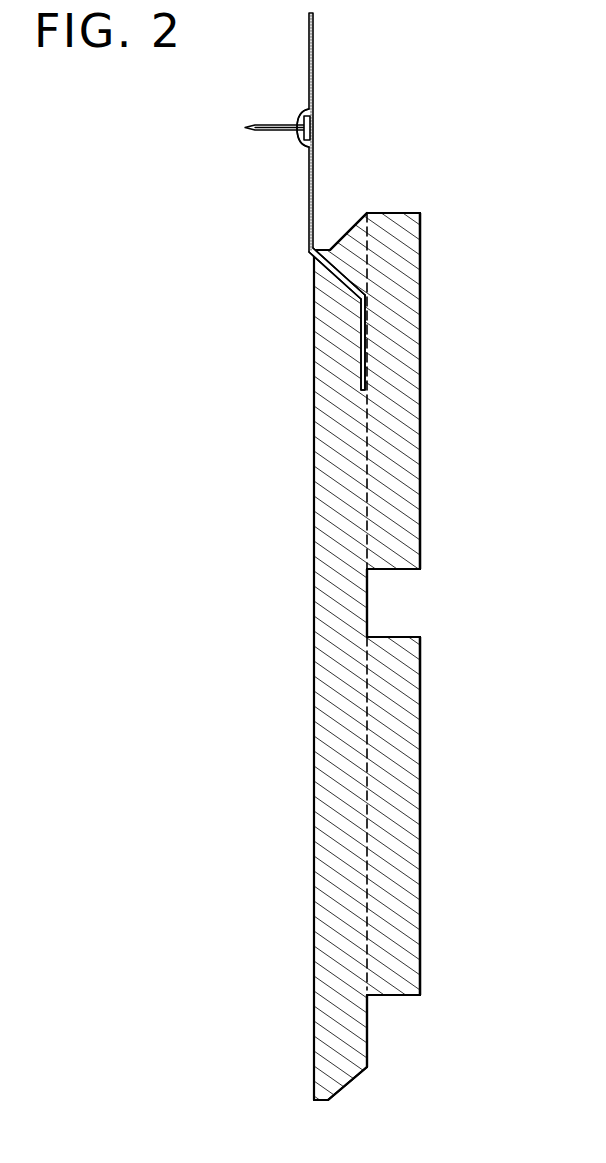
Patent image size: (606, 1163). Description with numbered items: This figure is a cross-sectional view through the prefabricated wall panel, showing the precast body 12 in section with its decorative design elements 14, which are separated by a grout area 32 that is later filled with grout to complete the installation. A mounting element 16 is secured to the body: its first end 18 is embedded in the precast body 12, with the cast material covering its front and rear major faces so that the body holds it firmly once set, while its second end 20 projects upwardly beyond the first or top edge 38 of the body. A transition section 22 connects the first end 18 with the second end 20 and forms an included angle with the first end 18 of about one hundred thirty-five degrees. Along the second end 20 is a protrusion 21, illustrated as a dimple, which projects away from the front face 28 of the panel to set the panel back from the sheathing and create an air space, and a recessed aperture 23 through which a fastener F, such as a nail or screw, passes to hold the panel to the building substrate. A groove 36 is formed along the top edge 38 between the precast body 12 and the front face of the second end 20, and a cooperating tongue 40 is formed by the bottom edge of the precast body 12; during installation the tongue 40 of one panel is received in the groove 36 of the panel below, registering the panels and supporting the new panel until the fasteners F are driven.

The precast body 12 is at (333, 947).
The decorative design element 14 is at (420, 463).
The mounting element 16 is at (351, 201).
The first end 18 is at (368, 345).
The second end 20 is at (308, 189).
The protrusion 21 is at (304, 113).
The transition section 22 is at (342, 283).
The recessed aperture 23 is at (300, 136).
The front face 28 is at (421, 393).
The grout area 32 is at (368, 600).
The groove 36 is at (320, 246).
The top edge 38 is at (397, 212).
The tongue 40 is at (318, 1102).
The fastener F is at (298, 136).